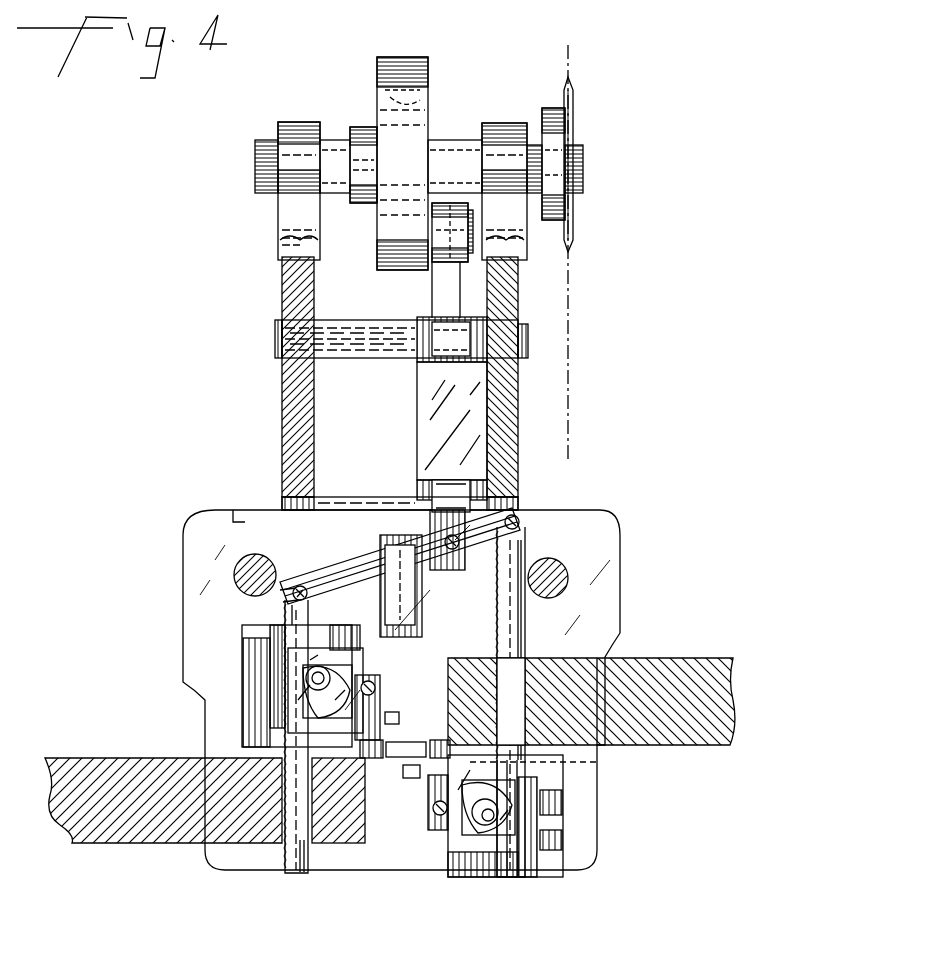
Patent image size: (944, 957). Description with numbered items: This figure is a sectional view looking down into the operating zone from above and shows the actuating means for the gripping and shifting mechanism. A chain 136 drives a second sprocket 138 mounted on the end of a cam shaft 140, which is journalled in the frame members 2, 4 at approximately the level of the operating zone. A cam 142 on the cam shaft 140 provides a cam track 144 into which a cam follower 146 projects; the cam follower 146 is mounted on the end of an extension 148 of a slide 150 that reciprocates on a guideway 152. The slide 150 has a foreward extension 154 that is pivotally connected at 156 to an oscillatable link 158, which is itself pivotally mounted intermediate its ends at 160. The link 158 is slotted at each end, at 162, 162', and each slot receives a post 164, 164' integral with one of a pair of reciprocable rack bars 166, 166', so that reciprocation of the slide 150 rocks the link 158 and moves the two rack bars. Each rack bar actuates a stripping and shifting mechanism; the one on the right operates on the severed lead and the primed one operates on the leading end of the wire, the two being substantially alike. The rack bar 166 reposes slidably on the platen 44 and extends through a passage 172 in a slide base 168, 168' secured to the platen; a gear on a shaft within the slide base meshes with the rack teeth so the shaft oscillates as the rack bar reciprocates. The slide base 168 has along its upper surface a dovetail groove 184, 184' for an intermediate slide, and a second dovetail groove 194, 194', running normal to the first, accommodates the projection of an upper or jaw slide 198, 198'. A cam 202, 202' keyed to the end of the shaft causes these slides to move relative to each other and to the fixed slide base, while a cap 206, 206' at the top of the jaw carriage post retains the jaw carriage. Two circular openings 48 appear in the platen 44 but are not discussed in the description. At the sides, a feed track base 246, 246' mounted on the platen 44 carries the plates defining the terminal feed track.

The frame member 2 is at (282, 410).
The frame member 4 is at (505, 432).
The platen 44 is at (621, 538).
The mounting hole 48 is at (248, 568).
The chain 136 is at (618, 352).
The second sprocket 138 is at (572, 128).
The cam shaft 140 is at (576, 170).
The cam 142 is at (395, 58).
The cam track 144 is at (419, 92).
The cam follower 146 is at (432, 240).
The extension 148 is at (434, 297).
The slide 150 is at (417, 402).
The guideway 152 is at (417, 455).
The foreward extension 154 is at (427, 522).
The pivotal connection 156 is at (432, 500).
The oscillatable link 158 is at (355, 562).
The pivot mounting 160 is at (405, 580).
The slot 162 is at (447, 552).
The slot 162' is at (290, 564).
The post 164 is at (505, 517).
The post 164' is at (258, 603).
The rack bar 166 is at (537, 702).
The rack bar 166' is at (255, 623).
The slide base 168 is at (510, 842).
The slide base 168' is at (298, 701).
The passage 172 is at (552, 763).
The dovetail groove 184 is at (578, 827).
The dovetail groove 184' is at (205, 692).
The dovetail groove 194 is at (512, 846).
The dovetail groove 194' is at (331, 734).
The jaw slide 198 is at (465, 881).
The jaw slide 198' is at (251, 676).
The cam 202 is at (457, 813).
The cam 202' is at (353, 690).
The cap 206 is at (415, 802).
The cap 206' is at (405, 707).
The feed track base 246 is at (205, 820).
The feed track base 246' is at (591, 717).